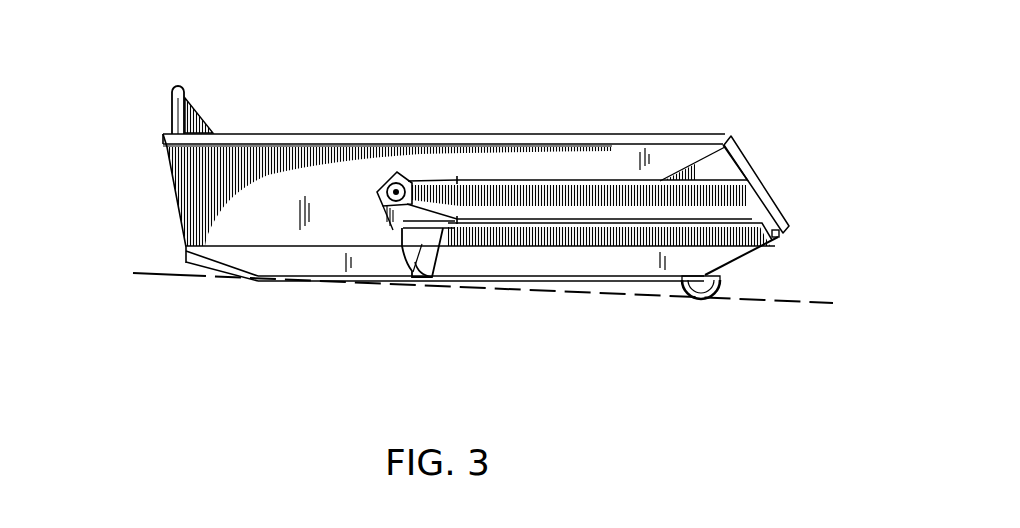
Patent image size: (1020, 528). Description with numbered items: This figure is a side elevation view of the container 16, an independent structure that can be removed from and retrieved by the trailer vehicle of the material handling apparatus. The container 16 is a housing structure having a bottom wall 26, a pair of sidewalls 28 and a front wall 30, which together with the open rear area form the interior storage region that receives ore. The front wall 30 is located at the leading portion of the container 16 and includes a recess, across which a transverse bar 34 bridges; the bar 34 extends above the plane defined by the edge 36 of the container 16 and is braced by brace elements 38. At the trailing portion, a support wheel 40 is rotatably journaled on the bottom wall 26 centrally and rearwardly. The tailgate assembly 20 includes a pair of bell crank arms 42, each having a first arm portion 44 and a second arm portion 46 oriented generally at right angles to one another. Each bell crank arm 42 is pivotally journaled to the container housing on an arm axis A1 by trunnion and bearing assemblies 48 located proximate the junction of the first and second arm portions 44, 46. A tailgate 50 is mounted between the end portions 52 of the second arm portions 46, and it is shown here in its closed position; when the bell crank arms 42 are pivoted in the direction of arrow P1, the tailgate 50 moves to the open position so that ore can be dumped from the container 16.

The container 16 is at (134, 93).
The tailgate assembly 20 is at (791, 68).
The bottom wall 26 is at (617, 282).
The sidewalls 28 is at (212, 232).
The front wall 30 is at (172, 198).
The bar 34 is at (173, 112).
The edge 36 is at (570, 137).
The brace elements 38 is at (197, 120).
The support wheel 40 is at (695, 300).
The bell crank arms 42 is at (420, 140).
The first arm portion 44 is at (602, 172).
The second arm portion 46 is at (430, 240).
The trunnion and bearing assemblies 48 is at (386, 196).
The tailgate 50 is at (740, 143).
The end portions 52 is at (757, 183).
The arm axis A1 is at (383, 188).
The arrow P1 is at (511, 266).